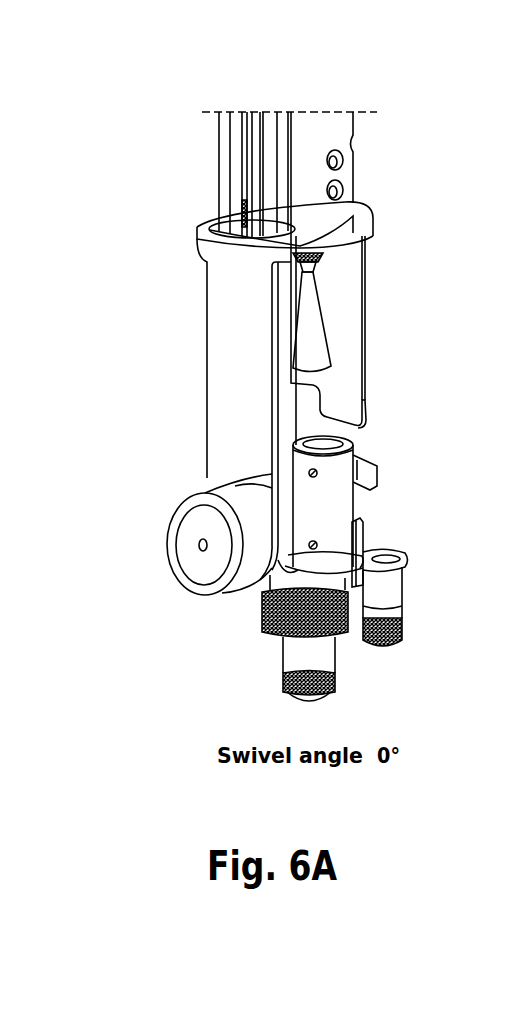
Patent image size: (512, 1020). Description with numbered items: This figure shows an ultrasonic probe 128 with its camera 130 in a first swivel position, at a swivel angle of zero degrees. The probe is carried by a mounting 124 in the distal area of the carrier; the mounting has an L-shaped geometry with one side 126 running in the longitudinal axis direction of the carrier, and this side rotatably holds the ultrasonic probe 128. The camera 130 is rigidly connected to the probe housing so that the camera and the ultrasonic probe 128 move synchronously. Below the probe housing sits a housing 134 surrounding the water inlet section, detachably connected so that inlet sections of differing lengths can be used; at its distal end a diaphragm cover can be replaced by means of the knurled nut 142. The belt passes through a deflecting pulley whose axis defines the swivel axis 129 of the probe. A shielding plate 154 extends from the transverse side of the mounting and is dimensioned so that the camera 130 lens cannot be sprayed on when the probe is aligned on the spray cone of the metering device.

The mounting 124 is at (228, 262).
The side 126 is at (218, 376).
The shielding plate 154 is at (340, 287).
The ultrasonic probe 128 is at (338, 503).
The swivel axis 129 is at (200, 547).
The camera 130 is at (385, 595).
The housing 134 is at (320, 657).
The knurled nut 142 is at (282, 681).